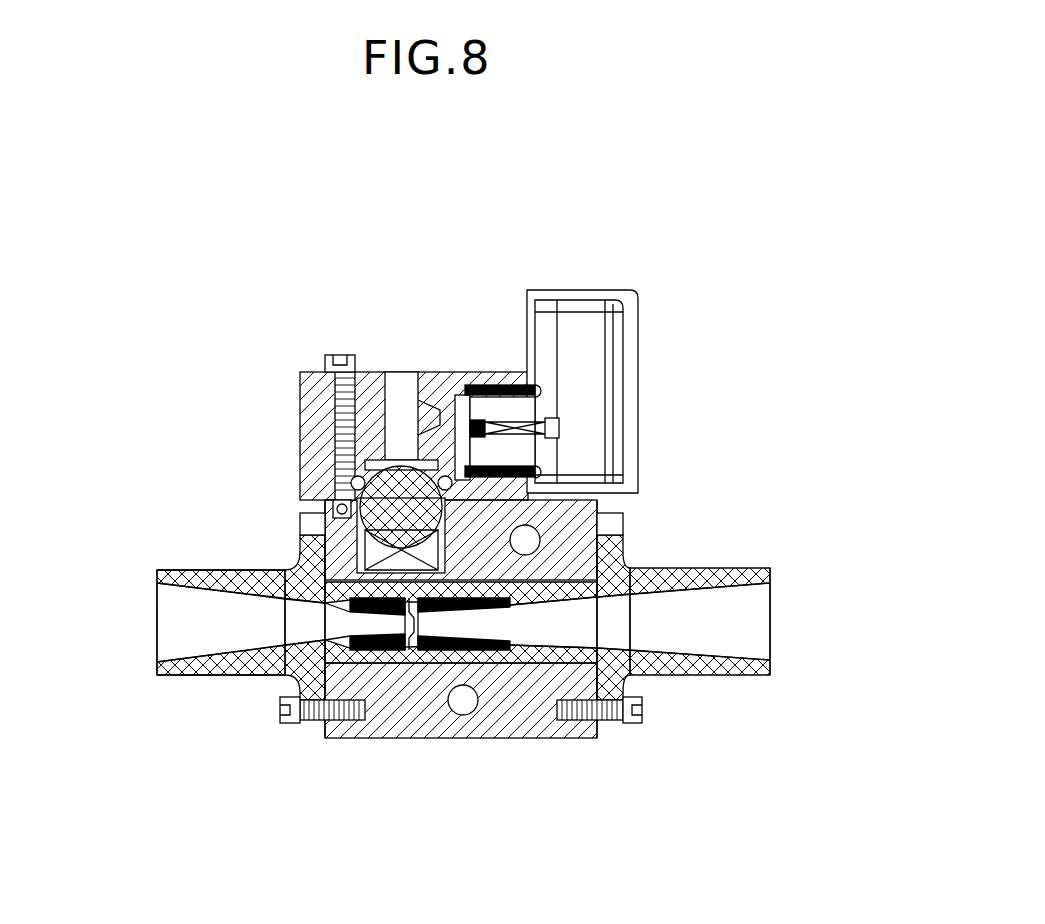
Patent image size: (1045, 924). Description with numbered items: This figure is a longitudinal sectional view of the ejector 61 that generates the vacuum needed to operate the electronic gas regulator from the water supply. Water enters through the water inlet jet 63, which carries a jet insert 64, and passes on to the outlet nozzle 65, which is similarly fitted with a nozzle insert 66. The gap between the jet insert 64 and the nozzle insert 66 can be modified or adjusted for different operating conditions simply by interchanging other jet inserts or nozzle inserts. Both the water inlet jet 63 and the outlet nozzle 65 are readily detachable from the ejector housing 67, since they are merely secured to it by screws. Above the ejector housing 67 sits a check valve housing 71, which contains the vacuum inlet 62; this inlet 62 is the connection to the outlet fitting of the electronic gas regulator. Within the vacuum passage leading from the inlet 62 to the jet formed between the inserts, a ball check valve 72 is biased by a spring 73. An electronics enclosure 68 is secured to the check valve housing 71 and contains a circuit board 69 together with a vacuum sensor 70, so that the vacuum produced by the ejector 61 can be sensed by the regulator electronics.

The ejector 61 is at (527, 742).
The inlet 62 is at (398, 372).
The water inlet jet 63 is at (165, 618).
The jet insert 64 is at (287, 566).
The outlet nozzle 65 is at (742, 607).
The nozzle insert 66 is at (640, 568).
The ejector housing 67 is at (600, 505).
The electronics enclosure 68 is at (638, 292).
The circuit board 69 is at (560, 366).
The vacuum sensor 70 is at (558, 427).
The check valve housing 71 is at (360, 380).
The ball check valve 72 is at (352, 463).
The spring 73 is at (315, 516).